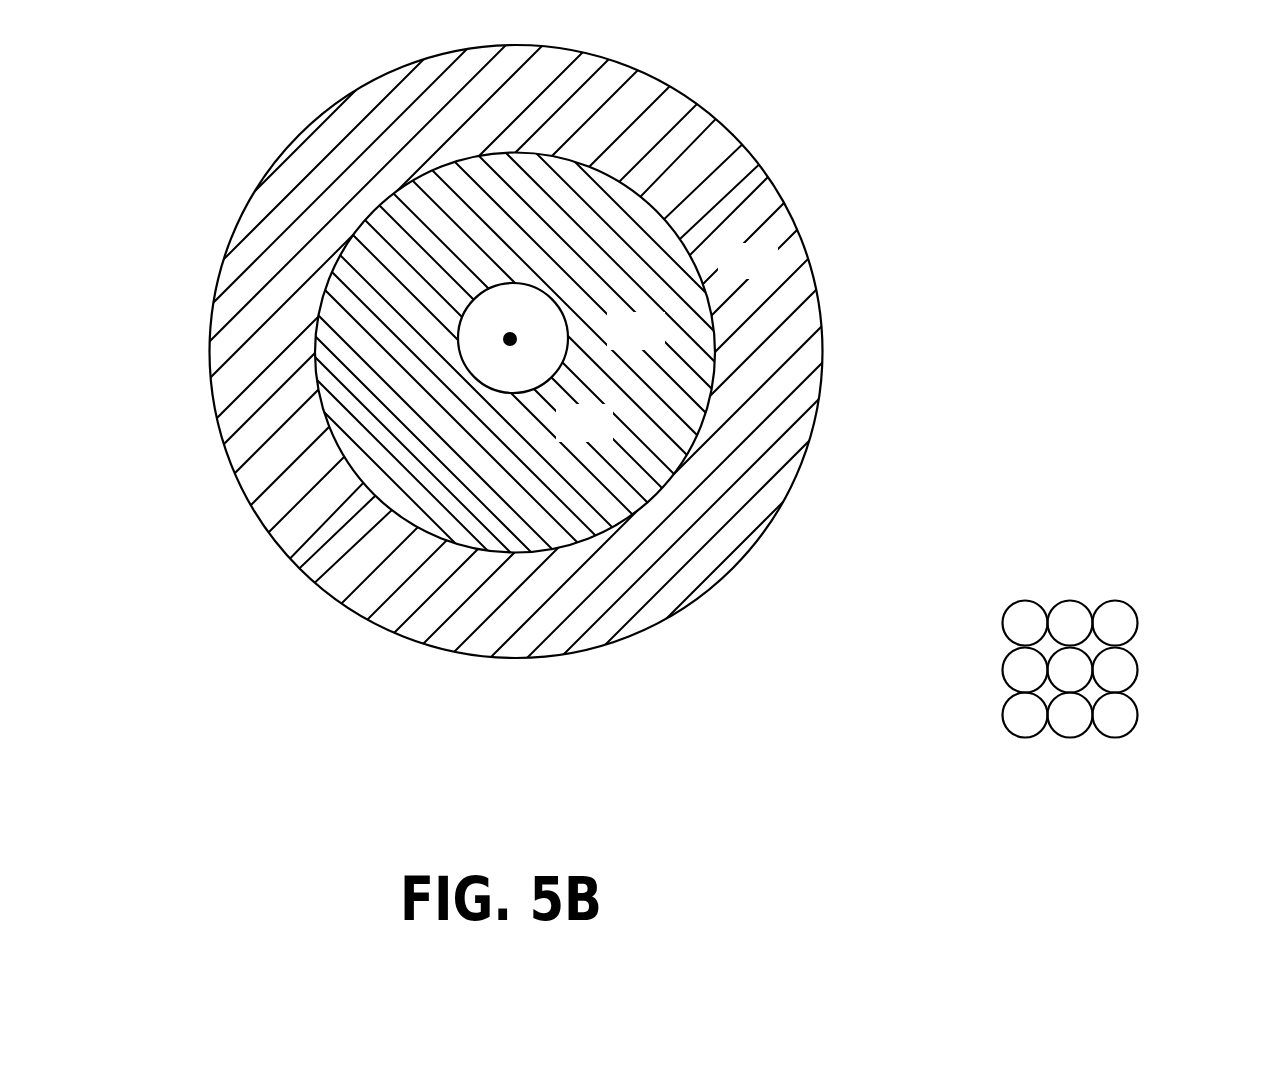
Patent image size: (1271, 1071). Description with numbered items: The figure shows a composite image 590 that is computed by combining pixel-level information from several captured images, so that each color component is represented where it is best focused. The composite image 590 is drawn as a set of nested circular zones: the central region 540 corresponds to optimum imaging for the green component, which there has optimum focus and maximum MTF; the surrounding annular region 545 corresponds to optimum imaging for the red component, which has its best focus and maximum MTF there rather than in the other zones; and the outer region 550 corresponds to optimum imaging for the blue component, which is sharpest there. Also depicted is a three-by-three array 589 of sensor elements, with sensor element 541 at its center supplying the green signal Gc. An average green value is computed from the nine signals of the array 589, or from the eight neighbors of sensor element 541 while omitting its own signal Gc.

The composite image 590 is at (927, 78).
The region for blue component 550 is at (772, 273).
The region for red component 545 is at (660, 346).
The region for green component 540 is at (540, 329).
The central sensor element 541 is at (510, 347).
The 3×3 array of sensor elements 589 is at (1207, 612).